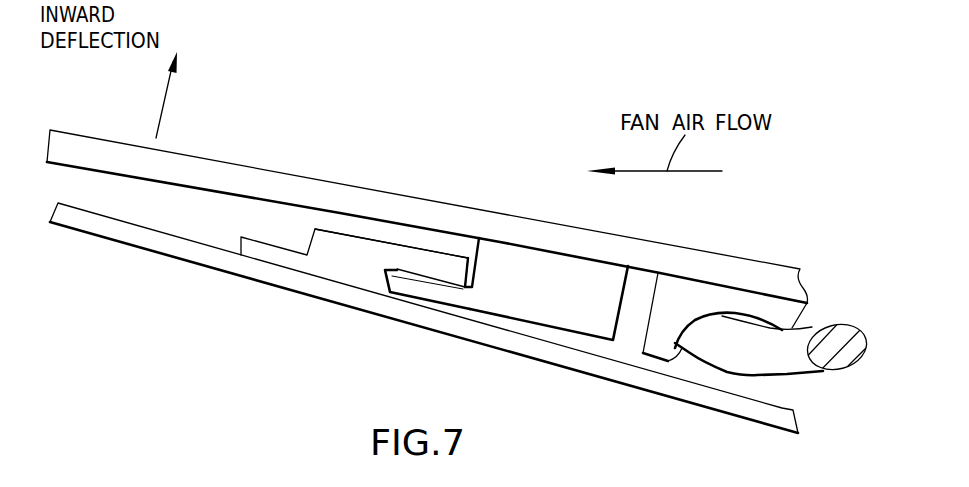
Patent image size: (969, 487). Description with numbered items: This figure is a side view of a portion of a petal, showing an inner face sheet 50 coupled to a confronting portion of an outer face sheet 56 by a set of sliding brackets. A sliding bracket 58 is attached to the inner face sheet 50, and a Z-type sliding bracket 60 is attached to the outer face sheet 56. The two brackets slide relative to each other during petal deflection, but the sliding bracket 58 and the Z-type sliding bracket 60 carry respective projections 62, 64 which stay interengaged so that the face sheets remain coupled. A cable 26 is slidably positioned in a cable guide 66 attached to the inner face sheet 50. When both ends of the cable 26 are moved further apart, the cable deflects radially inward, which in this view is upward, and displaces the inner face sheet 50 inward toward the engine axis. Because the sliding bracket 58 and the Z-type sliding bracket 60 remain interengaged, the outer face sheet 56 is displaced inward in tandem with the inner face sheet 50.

The cable 26 is at (782, 378).
The inner face sheet 50 is at (183, 153).
The outer face sheet 56 is at (136, 248).
The sliding bracket 58 is at (547, 325).
The Z-type sliding bracket 60 is at (350, 236).
The projection 62 is at (410, 283).
The projection 64 is at (438, 263).
The cable guide 66 is at (670, 353).